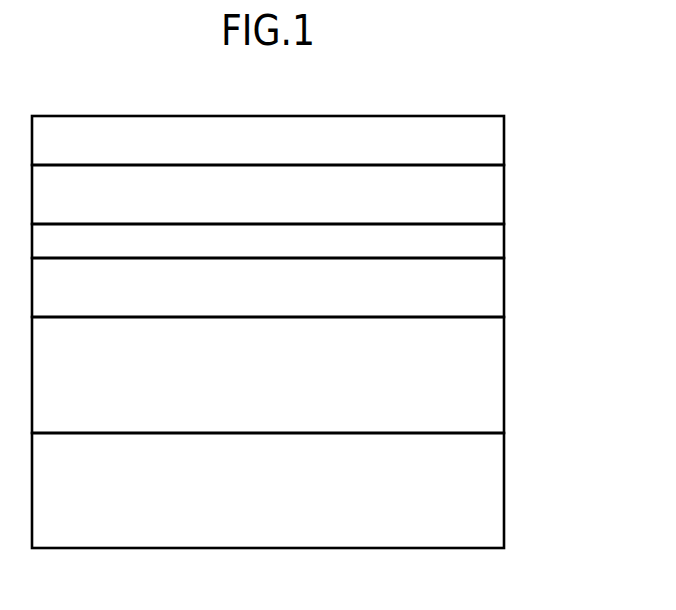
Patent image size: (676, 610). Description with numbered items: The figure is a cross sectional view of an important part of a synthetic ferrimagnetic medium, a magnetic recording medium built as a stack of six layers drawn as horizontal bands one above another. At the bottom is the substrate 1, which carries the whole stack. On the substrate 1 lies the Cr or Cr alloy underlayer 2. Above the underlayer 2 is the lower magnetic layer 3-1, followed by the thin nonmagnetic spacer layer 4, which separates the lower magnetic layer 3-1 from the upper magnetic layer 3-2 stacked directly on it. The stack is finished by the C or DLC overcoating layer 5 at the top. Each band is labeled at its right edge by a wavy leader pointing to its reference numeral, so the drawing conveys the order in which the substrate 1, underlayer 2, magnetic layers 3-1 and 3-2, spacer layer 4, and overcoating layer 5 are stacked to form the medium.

The substrate 1 is at (504, 480).
The Cr or Cr alloy underlayer 2 is at (504, 372).
The lower magnetic layer 3-1 is at (504, 287).
The nonmagnetic spacer layer 4 is at (504, 238).
The upper magnetic layer 3-2 is at (504, 195).
The C or DLC overcoating layer 5 is at (504, 138).